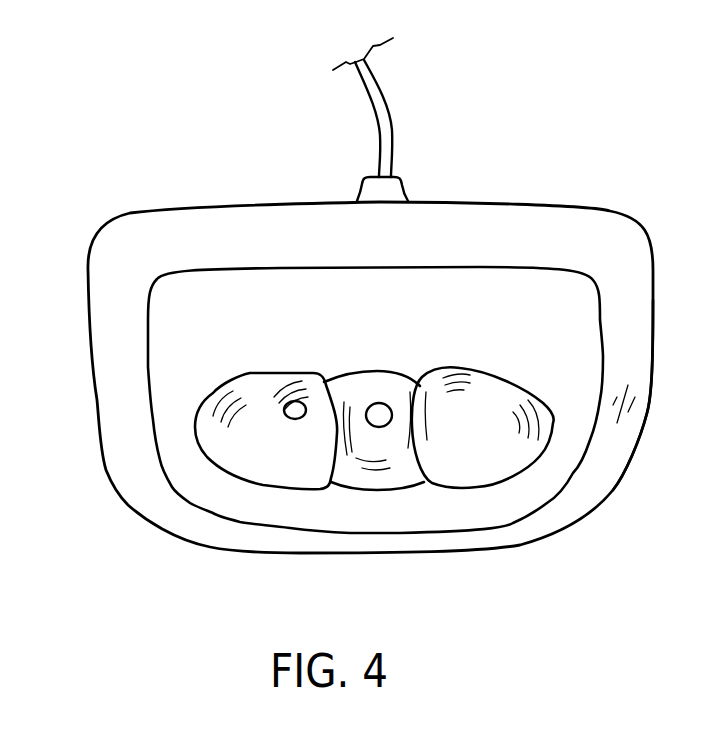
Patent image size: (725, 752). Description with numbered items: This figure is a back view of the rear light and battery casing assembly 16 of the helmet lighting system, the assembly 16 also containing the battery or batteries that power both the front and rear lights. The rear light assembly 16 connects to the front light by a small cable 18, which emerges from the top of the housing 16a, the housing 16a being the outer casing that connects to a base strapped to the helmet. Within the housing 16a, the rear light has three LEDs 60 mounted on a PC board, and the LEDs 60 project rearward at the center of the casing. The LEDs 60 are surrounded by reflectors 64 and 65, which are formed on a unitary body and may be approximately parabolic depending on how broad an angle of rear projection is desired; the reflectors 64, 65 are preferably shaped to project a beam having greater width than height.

The rear-mounted light assembly 16 is at (582, 158).
The housing 16a is at (618, 465).
The cable 18 is at (383, 98).
The LEDs 60 is at (383, 420).
The reflectors 64 is at (225, 456).
The reflector 65 is at (407, 463).